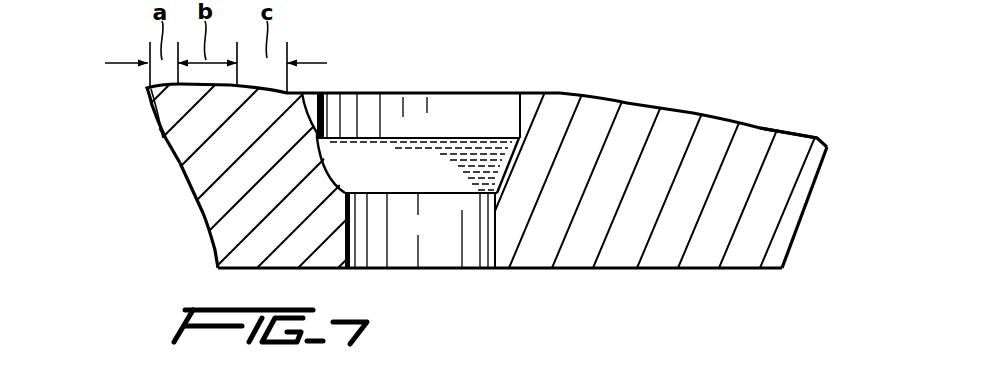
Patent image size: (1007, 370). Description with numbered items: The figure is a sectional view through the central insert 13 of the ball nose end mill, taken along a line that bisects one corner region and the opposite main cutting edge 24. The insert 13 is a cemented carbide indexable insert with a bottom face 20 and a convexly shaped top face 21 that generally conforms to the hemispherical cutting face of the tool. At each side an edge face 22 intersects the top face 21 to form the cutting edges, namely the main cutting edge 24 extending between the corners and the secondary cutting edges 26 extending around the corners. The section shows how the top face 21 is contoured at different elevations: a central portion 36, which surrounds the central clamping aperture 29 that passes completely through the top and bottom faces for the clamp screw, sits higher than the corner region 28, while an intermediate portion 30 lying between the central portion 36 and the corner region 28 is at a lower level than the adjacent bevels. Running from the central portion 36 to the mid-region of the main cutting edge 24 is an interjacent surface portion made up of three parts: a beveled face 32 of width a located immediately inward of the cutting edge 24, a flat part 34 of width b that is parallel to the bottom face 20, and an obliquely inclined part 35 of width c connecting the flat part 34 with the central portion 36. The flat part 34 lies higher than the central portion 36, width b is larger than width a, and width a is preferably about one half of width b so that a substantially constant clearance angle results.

The central insert 13 is at (141, 120).
The bottom face 20 is at (621, 269).
The top face 21 is at (613, 94).
The edge face 22 is at (183, 187).
The main cutting edge 24 is at (147, 88).
The secondary cutting edge 26 is at (827, 147).
The corner region 28 is at (793, 133).
The counterbore 29 is at (520, 123).
The intermediate portion 30 is at (713, 113).
The beveled face 32 is at (161, 147).
The flat part 34 is at (213, 88).
The obliquely inclined part 35 is at (349, 174).
The central portion 36 is at (327, 140).